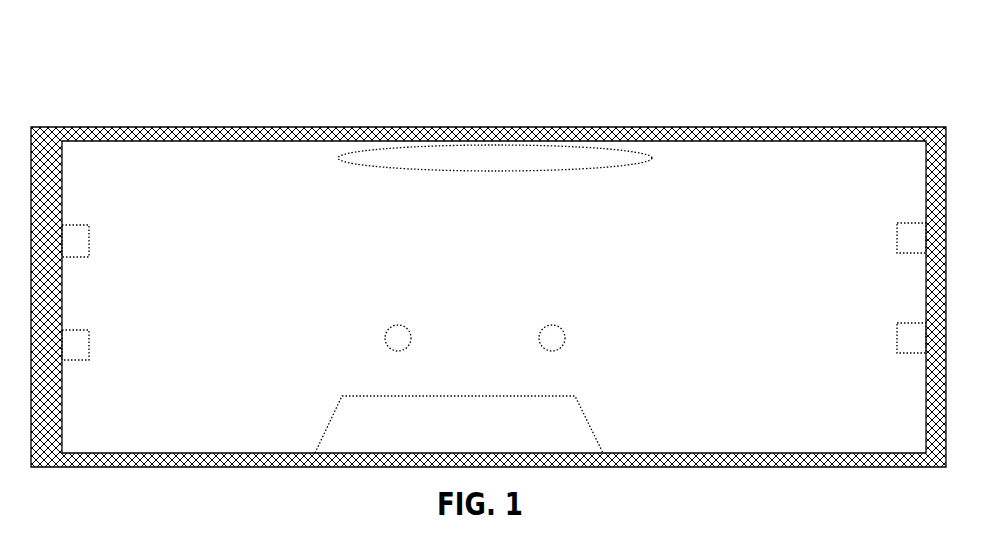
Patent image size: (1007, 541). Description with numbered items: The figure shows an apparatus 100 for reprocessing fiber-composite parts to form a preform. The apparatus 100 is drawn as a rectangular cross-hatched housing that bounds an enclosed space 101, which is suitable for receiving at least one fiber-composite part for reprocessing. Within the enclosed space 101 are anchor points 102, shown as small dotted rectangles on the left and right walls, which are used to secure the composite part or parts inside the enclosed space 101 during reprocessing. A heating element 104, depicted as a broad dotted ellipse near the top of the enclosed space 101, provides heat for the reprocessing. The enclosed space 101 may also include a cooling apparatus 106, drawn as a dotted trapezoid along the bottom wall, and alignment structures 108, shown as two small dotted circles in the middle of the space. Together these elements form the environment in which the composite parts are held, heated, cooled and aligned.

The apparatus 100 is at (663, 105).
The enclosed space 101 is at (228, 182).
The anchor points 102 is at (77, 328).
The heating element 104 is at (552, 170).
The cooling apparatus 106 is at (588, 423).
The alignment structures 108 is at (408, 327).